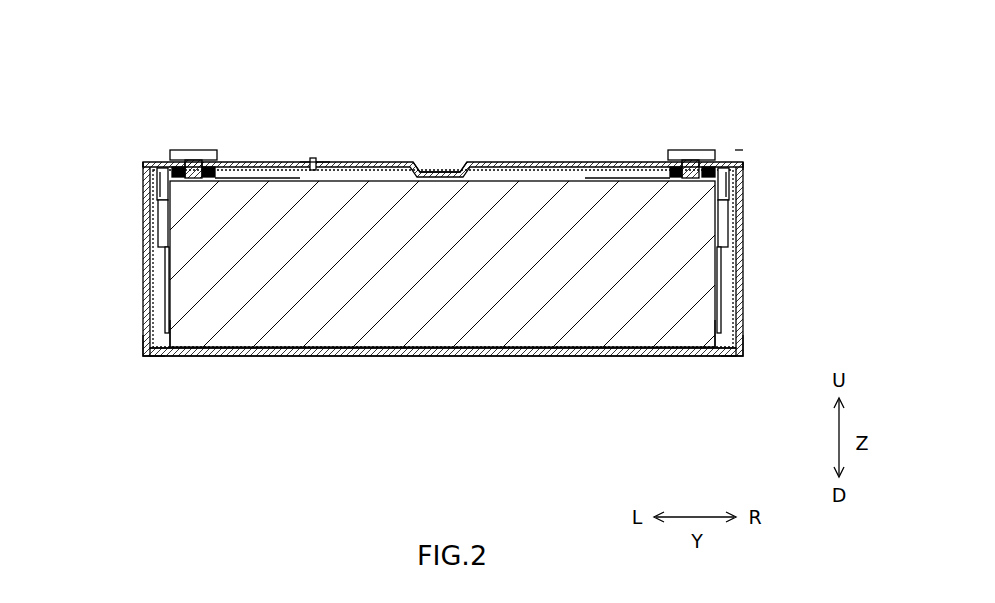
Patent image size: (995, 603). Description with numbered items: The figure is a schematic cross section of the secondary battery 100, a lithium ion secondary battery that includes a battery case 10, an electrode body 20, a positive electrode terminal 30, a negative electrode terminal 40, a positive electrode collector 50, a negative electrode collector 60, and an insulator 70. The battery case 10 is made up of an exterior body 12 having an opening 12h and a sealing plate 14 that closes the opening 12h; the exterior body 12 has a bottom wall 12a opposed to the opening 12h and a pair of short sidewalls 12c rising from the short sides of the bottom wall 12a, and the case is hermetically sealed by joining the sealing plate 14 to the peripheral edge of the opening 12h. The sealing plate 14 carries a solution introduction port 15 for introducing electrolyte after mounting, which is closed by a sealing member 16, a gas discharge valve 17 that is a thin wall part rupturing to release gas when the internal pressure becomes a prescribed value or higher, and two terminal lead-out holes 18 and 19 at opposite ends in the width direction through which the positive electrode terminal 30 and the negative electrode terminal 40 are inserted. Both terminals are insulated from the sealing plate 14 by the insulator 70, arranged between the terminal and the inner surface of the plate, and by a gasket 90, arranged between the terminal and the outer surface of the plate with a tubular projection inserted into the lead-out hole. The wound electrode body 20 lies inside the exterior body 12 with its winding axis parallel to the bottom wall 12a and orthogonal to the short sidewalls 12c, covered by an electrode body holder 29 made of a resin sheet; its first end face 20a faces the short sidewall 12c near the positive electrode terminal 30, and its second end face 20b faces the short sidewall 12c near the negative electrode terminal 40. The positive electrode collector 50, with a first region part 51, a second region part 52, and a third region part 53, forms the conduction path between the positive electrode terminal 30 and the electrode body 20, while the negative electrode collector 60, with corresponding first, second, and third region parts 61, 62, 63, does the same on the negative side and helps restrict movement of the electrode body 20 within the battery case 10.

The secondary battery 100 is at (734, 64).
The battery case 10 is at (774, 157).
The exterior body 12 is at (752, 306).
The bottom wall 12a is at (296, 358).
The short sidewall 12c is at (143, 336).
The opening 12h is at (146, 161).
The sealing plate 14 is at (506, 160).
The solution introduction port 15 is at (323, 103).
The sealing member 16 is at (315, 158).
The gas discharge valve 17 is at (446, 164).
The terminal lead-out hole 18 is at (190, 151).
The terminal lead-out hole 19 is at (688, 151).
The electrode body 20 is at (180, 320).
The first end face 20a is at (166, 344).
The second end face 20b is at (722, 346).
The electrode body holder 29 is at (150, 284).
The positive electrode terminal 30 is at (197, 146).
The negative electrode terminal 40 is at (695, 145).
The positive electrode collector 50 is at (99, 250).
The first region part 51 is at (159, 212).
The second region part 52 is at (157, 185).
The third region part 53 is at (126, 283).
The negative electrode collector 60 is at (786, 250).
The first region part 61 is at (728, 212).
The second region part 62 is at (729, 185).
The third region part 63 is at (757, 283).
The insulator 70 is at (242, 176).
The gasket 90 is at (178, 170).